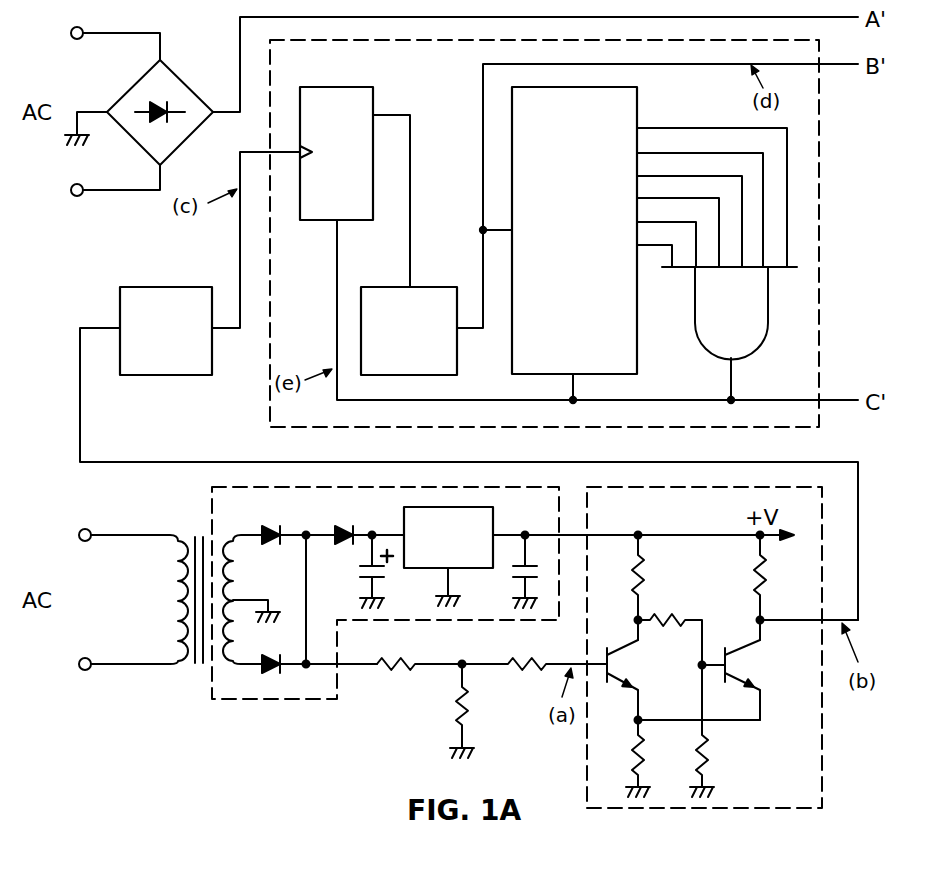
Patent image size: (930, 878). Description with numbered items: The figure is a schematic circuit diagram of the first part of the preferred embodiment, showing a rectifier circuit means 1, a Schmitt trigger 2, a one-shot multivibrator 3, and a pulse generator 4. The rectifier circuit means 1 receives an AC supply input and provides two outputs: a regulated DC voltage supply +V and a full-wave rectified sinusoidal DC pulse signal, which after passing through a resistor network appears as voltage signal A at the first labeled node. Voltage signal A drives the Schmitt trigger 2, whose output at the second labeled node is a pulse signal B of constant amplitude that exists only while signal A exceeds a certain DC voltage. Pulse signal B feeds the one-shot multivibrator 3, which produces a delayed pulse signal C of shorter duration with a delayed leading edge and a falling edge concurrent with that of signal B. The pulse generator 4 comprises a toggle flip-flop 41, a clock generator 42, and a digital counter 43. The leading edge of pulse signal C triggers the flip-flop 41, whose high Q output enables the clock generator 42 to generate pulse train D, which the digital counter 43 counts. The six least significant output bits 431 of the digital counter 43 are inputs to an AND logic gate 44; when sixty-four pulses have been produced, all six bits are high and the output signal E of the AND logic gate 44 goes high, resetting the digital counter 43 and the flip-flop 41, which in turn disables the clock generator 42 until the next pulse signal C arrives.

The rectifier circuit means 1 is at (300, 702).
The Schmitt trigger 2 is at (822, 752).
The one-shot multivibrator 3 is at (176, 286).
The pulse generator 4 is at (820, 257).
The toggle flip-flop 41 is at (342, 86).
The clock generator 42 is at (386, 286).
The digital counter 43 is at (640, 97).
The six least significant output bits 431 is at (687, 197).
The AND logic gate 44 is at (762, 346).